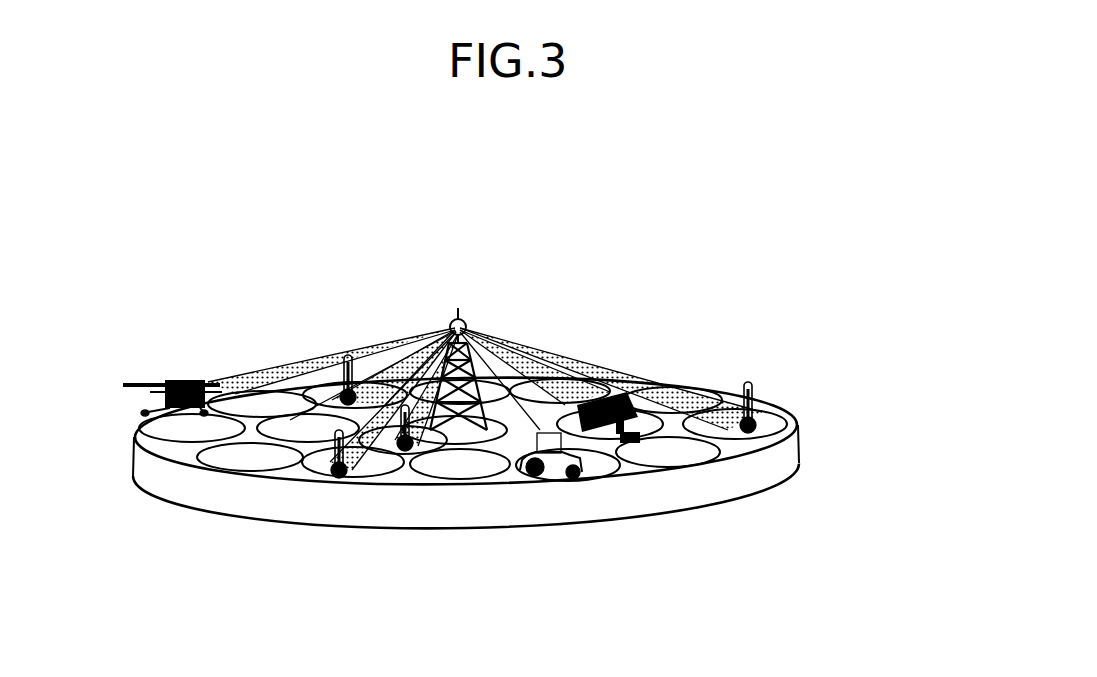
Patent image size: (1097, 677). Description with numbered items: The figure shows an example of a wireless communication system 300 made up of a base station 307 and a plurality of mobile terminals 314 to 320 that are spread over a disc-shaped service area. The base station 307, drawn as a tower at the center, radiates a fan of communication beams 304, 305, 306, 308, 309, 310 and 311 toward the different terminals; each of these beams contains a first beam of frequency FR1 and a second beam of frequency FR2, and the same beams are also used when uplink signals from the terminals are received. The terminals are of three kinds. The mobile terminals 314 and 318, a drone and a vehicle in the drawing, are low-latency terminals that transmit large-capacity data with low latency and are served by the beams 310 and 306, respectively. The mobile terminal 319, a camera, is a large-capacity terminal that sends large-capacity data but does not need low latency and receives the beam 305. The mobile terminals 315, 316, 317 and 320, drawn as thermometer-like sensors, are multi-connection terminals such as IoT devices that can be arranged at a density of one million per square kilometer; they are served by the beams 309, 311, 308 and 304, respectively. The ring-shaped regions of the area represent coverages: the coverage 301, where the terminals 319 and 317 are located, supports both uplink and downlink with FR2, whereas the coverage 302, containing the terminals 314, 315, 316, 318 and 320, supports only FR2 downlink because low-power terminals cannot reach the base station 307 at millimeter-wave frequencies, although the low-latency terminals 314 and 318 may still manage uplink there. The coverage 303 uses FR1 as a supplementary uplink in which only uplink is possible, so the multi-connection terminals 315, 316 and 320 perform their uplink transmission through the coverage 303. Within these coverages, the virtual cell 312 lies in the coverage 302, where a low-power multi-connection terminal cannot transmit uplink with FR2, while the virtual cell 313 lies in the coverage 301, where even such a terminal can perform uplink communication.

The wireless communication system 300 is at (870, 219).
The coverage 301 is at (663, 420).
The coverage 302 is at (800, 427).
The coverage 303 is at (800, 472).
The beam 304 is at (623, 383).
The beam 305 is at (560, 380).
The beam 306 is at (560, 360).
The base station 307 is at (467, 317).
The beam 308 is at (443, 328).
The beam 309 is at (397, 360).
The beam 310 is at (277, 423).
The beam 311 is at (355, 467).
The virtual cell 312 is at (177, 437).
The virtual cell 313 is at (230, 383).
The mobile terminal 314 is at (143, 398).
The mobile terminal 315 is at (347, 350).
The mobile terminal 316 is at (338, 483).
The mobile terminal 317 is at (408, 455).
The mobile terminal 318 is at (560, 474).
The mobile terminal 319 is at (622, 442).
The mobile terminal 320 is at (749, 435).